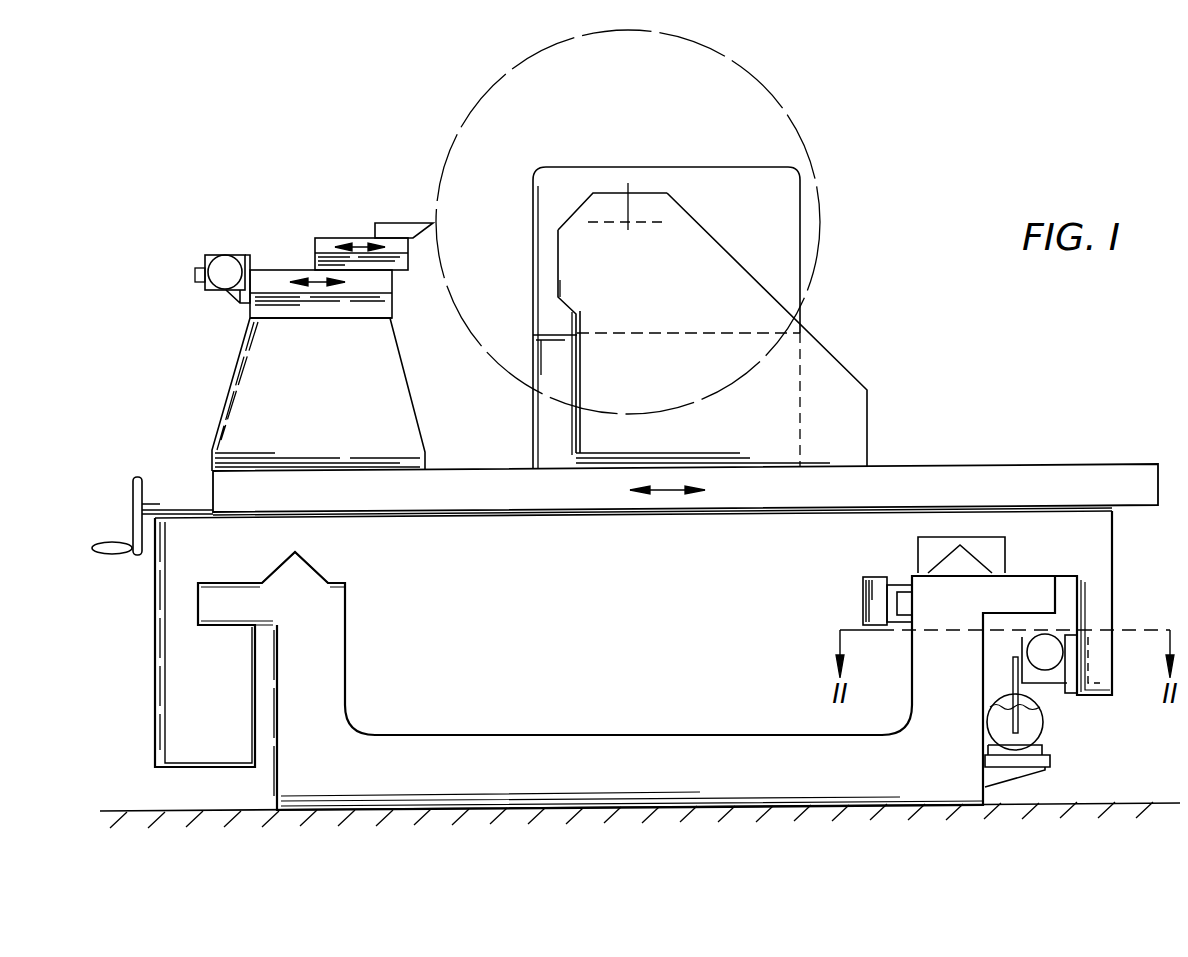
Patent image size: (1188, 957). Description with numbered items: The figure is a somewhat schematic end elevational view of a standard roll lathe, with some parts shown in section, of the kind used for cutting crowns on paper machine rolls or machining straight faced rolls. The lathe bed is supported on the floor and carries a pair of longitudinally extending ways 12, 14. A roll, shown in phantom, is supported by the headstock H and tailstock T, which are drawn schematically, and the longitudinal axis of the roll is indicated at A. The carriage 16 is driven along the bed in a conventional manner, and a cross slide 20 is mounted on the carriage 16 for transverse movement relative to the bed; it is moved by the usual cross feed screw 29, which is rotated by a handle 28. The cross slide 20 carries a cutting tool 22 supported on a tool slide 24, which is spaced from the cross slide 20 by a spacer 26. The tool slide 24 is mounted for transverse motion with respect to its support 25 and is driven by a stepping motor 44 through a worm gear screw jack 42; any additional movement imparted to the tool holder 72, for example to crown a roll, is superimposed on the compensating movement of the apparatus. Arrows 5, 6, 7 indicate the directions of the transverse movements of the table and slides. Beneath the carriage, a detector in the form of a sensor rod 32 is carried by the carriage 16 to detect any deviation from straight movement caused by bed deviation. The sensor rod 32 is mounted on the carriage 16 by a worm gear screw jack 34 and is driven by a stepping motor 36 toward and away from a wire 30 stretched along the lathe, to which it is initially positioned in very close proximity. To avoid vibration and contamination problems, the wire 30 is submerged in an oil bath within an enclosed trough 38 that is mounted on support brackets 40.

The direction of table movement arrow 5 is at (668, 490).
The direction of slide movement arrow 6 is at (360, 240).
The direction of slide movement arrow 7 is at (312, 270).
The way 12 is at (307, 609).
The way 14 is at (977, 609).
The carriage 16 is at (602, 558).
The cross slide 20 is at (775, 498).
The cutting tool 22 is at (392, 223).
The tool slide 24 is at (396, 283).
The support 25 is at (312, 316).
The spacer 26 is at (317, 396).
The handle 28 is at (132, 484).
The cross feed screw 29 is at (182, 510).
The wire 30 is at (990, 724).
The sensor rod 32 is at (1013, 680).
The worm gear screw jack 34 is at (1080, 696).
The stepping motor 36 is at (1027, 650).
The trough 38 is at (1042, 727).
The support bracket 40 is at (1042, 776).
The worm gear screw jack 42 is at (212, 300).
The stepping motor 44 is at (236, 252).
The tool holder 72 is at (326, 238).
The headstock H is at (780, 167).
The longitudinal axis A is at (626, 231).
The tailstock T is at (832, 362).